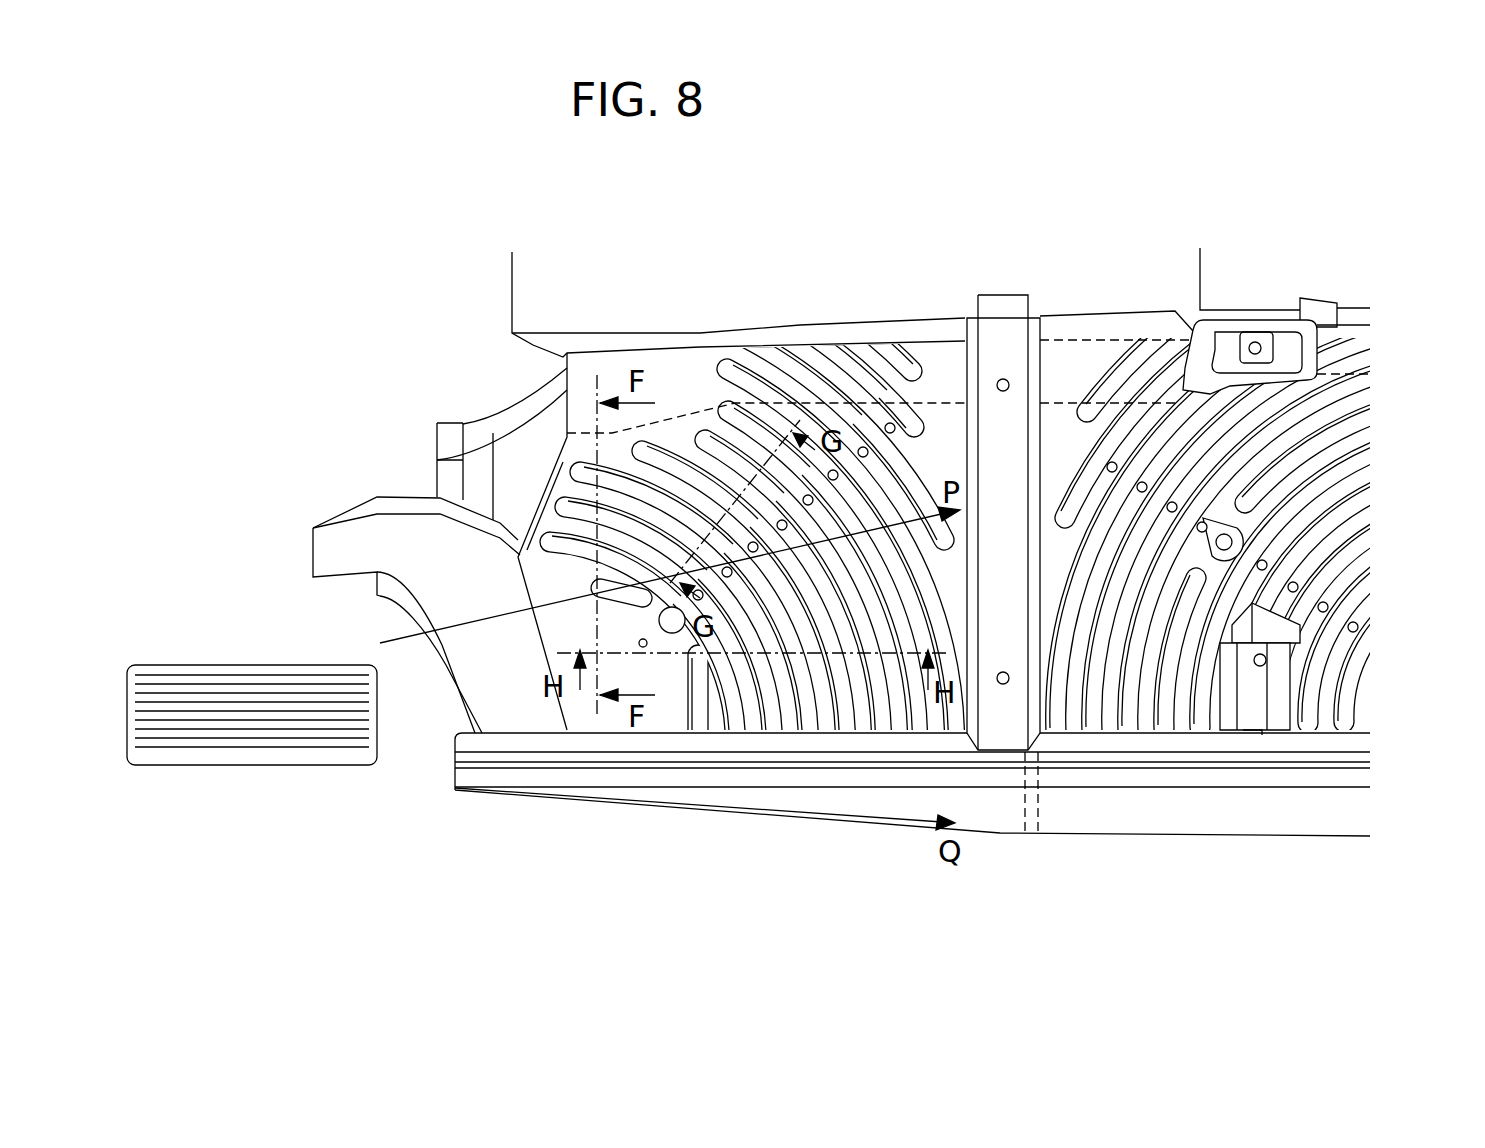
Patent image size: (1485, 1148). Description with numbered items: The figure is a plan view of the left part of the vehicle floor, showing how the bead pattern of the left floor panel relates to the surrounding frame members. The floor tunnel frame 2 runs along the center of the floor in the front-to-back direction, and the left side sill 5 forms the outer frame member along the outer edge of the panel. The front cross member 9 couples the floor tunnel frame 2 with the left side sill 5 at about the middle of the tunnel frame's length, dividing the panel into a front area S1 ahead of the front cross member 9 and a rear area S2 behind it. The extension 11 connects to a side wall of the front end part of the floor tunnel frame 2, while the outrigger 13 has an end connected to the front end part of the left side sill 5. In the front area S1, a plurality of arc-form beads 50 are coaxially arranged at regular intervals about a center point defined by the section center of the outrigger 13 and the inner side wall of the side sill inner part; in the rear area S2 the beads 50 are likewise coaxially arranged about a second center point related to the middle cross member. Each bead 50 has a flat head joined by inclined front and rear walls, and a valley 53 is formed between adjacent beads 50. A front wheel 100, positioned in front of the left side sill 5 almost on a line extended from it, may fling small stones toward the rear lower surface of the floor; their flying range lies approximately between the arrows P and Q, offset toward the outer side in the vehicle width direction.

The floor tunnel frame 2 is at (528, 283).
The left side sill 5 is at (1242, 837).
The front cross member 9 is at (1003, 727).
The extension 11 is at (437, 432).
The outrigger 13 is at (330, 551).
The bead 50 is at (770, 725).
The valley 53 is at (788, 722).
The front wheel 100 is at (214, 766).
The front area S1 is at (863, 576).
The rear area S2 is at (1310, 509).